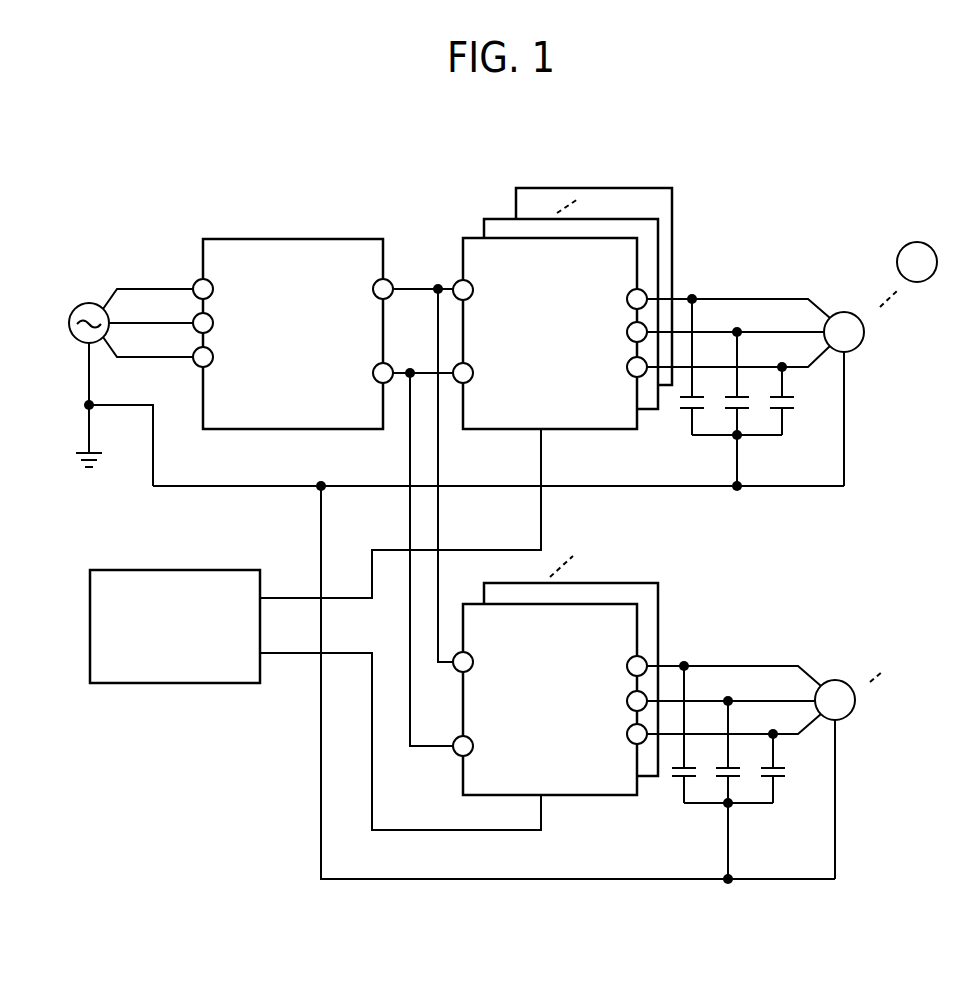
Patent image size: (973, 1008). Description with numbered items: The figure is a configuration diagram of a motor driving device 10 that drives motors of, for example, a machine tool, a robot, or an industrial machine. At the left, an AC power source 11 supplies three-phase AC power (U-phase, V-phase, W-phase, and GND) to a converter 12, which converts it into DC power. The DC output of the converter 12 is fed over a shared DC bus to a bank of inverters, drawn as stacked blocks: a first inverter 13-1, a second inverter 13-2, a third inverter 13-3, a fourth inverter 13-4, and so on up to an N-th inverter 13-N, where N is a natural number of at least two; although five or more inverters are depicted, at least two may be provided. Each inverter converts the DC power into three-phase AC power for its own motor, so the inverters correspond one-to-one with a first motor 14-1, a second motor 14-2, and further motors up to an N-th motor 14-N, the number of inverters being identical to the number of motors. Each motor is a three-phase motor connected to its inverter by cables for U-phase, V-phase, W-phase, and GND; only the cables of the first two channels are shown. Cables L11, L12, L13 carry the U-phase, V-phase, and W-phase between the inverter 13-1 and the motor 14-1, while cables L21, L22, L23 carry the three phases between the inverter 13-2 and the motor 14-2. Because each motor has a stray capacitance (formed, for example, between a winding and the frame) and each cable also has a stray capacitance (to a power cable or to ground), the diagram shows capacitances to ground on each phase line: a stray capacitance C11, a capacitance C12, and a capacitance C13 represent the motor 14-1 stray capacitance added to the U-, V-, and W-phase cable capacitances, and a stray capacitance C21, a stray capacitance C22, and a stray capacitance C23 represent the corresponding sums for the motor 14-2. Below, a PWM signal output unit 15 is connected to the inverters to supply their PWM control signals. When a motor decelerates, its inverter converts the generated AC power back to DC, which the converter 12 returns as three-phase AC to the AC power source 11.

The motor driving device 10 is at (790, 153).
The AC power source 11 is at (84, 300).
The converter 12 is at (285, 239).
The inverter 13-1 is at (588, 238).
The inverter 13-2 is at (603, 604).
The inverter 13-3 is at (640, 220).
The inverter 13-4 is at (647, 583).
The inverter 13-N is at (672, 247).
The motor 14-1 is at (843, 312).
The motor 14-2 is at (835, 680).
The motor 14-N is at (909, 242).
The PWM signal output unit 15 is at (188, 570).
The cable L11 is at (715, 298).
The cable L12 is at (752, 330).
The cable L13 is at (770, 362).
The cable L21 is at (700, 666).
The cable L22 is at (745, 700).
The cable L23 is at (757, 732).
The stray capacitance C11 is at (706, 365).
The capacitance C12 is at (750, 409).
The capacitance C13 is at (757, 399).
The stray capacitance C21 is at (698, 733).
The stray capacitance C22 is at (743, 790).
The stray capacitance C23 is at (750, 767).